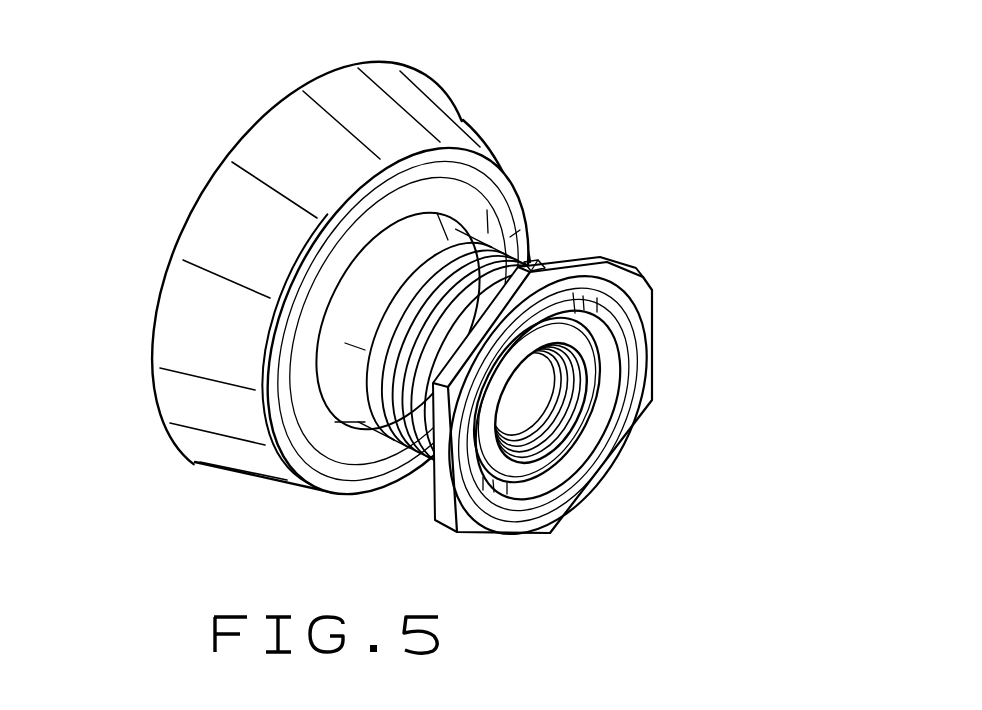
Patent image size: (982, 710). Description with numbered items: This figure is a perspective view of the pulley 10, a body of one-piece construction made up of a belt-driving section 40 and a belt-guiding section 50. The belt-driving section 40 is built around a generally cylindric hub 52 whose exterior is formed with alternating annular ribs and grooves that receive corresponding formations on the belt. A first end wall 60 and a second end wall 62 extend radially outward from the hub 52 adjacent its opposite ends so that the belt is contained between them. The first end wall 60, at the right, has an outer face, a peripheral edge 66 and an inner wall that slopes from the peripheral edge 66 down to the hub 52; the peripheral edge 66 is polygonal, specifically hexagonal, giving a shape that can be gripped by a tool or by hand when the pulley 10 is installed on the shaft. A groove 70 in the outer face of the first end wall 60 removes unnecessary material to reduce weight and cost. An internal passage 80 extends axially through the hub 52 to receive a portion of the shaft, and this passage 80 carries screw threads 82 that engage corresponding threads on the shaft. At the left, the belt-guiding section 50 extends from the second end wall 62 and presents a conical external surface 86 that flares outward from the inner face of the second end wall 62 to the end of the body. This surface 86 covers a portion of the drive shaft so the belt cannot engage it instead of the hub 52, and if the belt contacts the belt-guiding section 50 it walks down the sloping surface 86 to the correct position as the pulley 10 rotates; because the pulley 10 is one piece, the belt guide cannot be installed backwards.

The pulley 10 is at (411, 302).
The conical external surface 86 is at (440, 92).
The belt-guiding section 50 is at (345, 296).
The belt-driving section 40 is at (530, 265).
The peripheral edge 66 is at (617, 268).
The groove 70 is at (617, 353).
The screw threads 82 is at (558, 406).
The internal passage 80 is at (540, 420).
The first end wall 60 is at (572, 389).
The second end wall 62 is at (423, 455).
The hub 52 is at (403, 454).